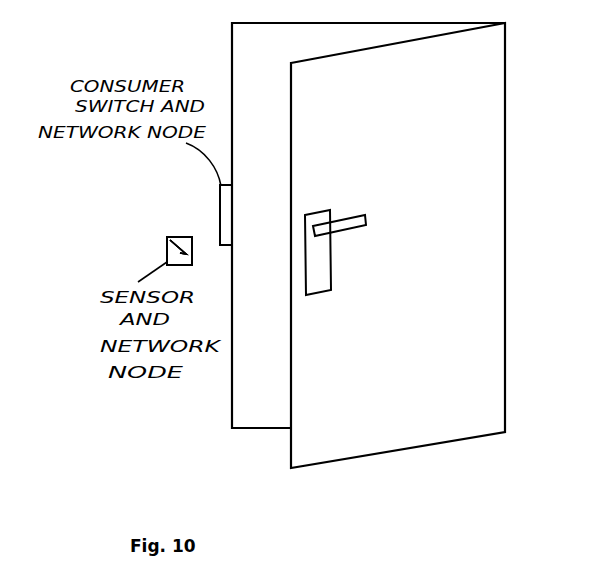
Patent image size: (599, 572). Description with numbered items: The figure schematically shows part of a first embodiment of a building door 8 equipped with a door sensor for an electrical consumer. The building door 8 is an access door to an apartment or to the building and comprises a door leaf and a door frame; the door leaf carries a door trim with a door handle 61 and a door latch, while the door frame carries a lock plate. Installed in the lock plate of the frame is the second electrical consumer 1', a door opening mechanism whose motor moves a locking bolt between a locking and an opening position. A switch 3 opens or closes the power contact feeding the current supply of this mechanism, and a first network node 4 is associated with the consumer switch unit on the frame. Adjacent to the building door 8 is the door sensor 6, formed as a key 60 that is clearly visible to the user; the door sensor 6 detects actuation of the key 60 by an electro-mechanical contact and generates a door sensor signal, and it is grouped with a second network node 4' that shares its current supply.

The building door 8 is at (208, 67).
The door handle 61 is at (353, 229).
The second electrical consumer 1' is at (173, 205).
The switch 3 is at (219, 209).
The first network node 4 is at (173, 205).
The door sensor 6 is at (167, 243).
The key 60 is at (167, 243).
The second network node 4' is at (145, 234).